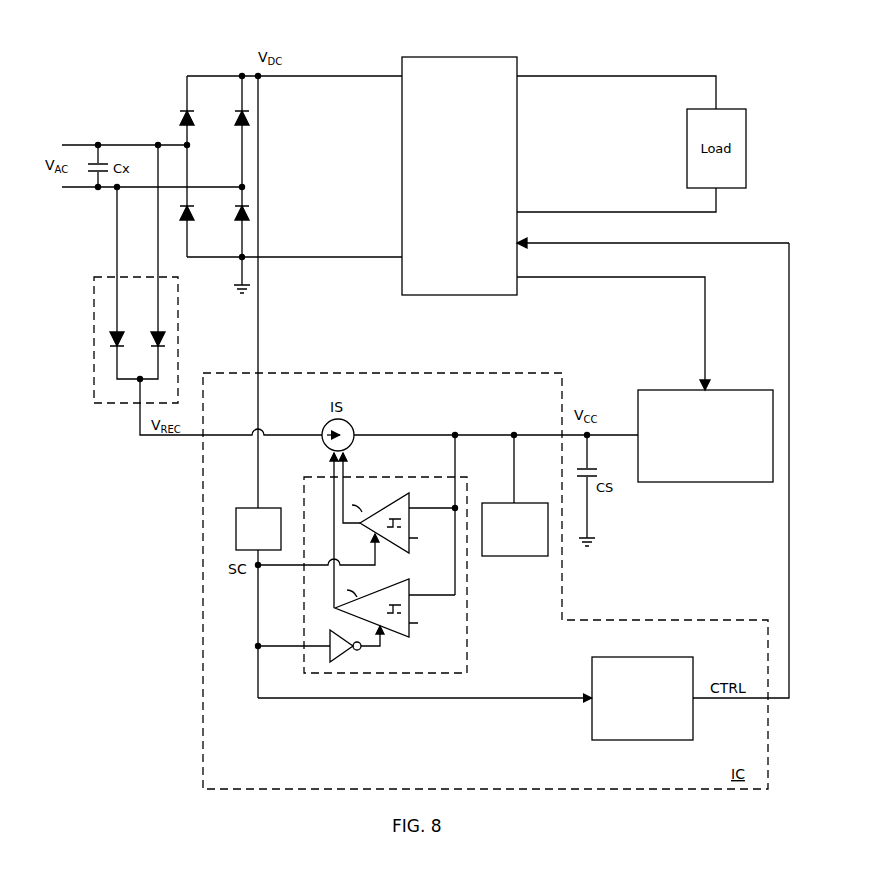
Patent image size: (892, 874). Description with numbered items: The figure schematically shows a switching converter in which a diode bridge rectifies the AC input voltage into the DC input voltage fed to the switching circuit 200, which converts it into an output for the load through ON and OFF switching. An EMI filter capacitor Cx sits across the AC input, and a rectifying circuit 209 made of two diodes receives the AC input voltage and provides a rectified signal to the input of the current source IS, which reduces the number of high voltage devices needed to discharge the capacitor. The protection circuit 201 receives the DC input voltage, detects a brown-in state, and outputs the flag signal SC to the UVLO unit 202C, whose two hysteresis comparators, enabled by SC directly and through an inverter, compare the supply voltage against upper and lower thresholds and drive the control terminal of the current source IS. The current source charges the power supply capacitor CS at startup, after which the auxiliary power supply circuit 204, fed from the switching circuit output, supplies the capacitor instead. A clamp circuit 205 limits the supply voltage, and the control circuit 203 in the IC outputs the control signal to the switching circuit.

The switching circuit 200 is at (427, 295).
The protection circuit 201 is at (258, 529).
The UVLO unit 202C is at (470, 673).
The control circuit 203 is at (606, 740).
The auxiliary power supply circuit 204 is at (716, 482).
The clamp circuit 205 is at (548, 556).
The rectifying circuit 209 is at (128, 403).